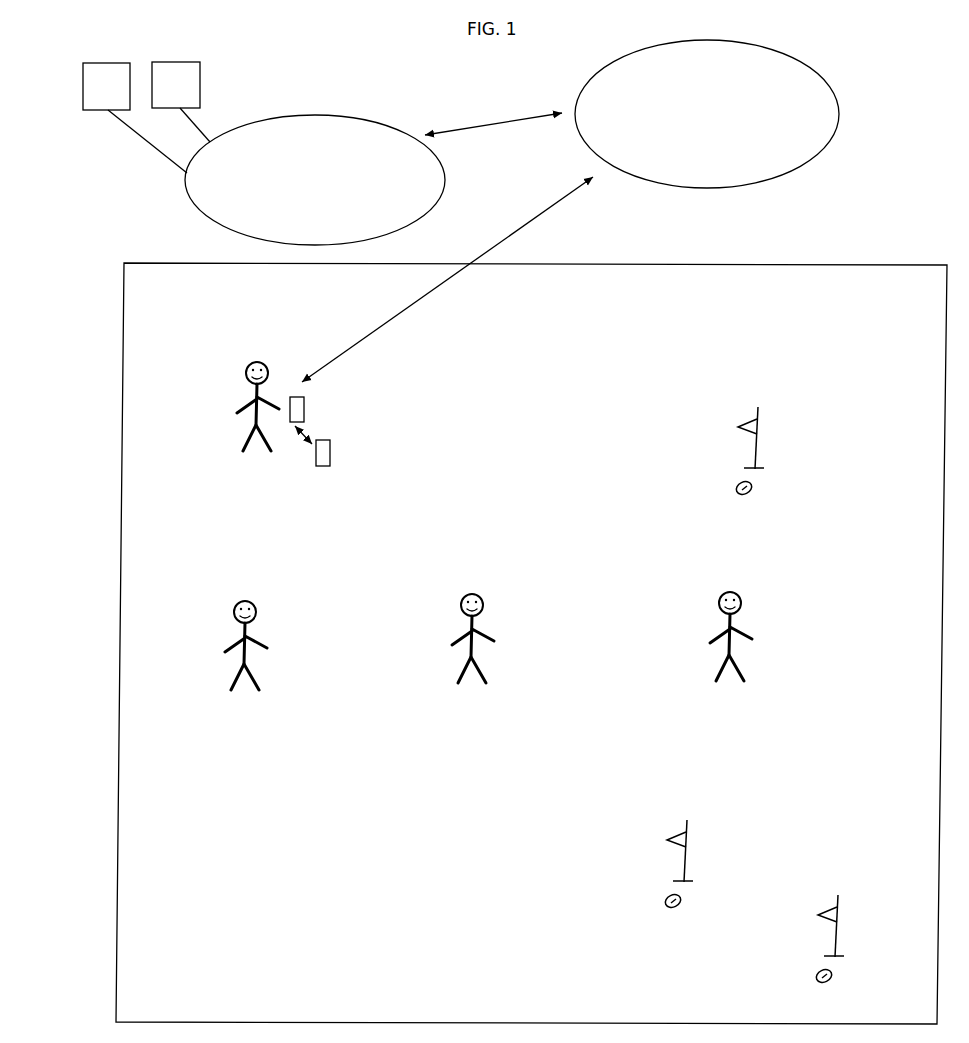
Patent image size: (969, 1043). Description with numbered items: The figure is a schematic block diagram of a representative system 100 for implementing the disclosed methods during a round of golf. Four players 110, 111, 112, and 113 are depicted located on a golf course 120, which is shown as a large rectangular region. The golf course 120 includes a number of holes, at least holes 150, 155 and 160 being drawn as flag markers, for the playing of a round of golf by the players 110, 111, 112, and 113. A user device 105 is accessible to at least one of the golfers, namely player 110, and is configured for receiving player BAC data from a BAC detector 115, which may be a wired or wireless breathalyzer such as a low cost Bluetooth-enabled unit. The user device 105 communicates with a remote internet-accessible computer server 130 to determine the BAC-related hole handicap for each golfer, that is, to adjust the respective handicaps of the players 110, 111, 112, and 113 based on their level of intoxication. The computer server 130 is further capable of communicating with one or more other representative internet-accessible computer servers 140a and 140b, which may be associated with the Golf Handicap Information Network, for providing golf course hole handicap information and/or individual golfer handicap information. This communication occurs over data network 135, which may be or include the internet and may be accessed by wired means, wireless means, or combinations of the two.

The system 100 is at (436, 57).
The user device 105 is at (307, 410).
The player 110 is at (257, 431).
The player 111 is at (246, 666).
The player 112 is at (468, 662).
The player 113 is at (725, 661).
The BAC detector 115 is at (333, 454).
The golf course 120 is at (814, 265).
The computer server 130 is at (450, 178).
The data network 135 is at (797, 63).
The computer server 140a is at (80, 86).
The computer server 140b is at (203, 86).
The hole 150 is at (785, 452).
The hole 155 is at (708, 865).
The hole 160 is at (865, 940).